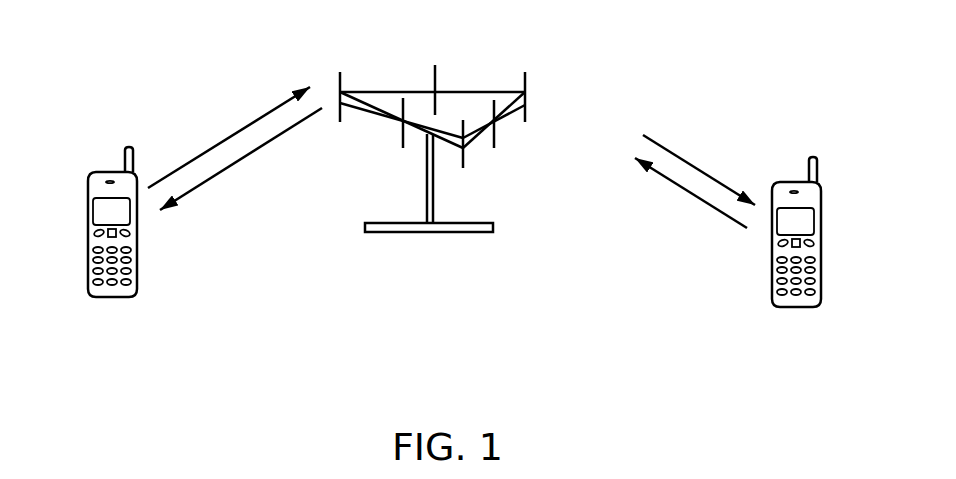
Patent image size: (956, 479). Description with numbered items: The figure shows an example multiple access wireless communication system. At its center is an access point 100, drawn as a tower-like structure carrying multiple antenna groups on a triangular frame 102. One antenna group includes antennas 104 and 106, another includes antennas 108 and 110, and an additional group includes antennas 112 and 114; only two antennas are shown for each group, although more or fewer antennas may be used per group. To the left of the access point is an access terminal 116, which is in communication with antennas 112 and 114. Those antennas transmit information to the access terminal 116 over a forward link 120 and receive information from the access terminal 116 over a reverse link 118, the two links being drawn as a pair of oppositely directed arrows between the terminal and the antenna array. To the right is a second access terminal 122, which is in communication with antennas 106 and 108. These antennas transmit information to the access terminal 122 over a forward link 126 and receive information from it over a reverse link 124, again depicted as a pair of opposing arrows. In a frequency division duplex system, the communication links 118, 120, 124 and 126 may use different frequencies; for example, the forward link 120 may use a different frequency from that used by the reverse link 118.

The access point 100 is at (442, 232).
The antenna array frame 102 is at (432, 120).
The antenna 104 is at (464, 163).
The antenna 106 is at (496, 135).
The antenna 108 is at (527, 110).
The antenna 110 is at (436, 73).
The antenna 112 is at (340, 80).
The antenna 114 is at (403, 139).
The access terminal 116 is at (88, 210).
The reverse link 118 is at (242, 128).
The forward link 120 is at (223, 173).
The access terminal 122 is at (822, 233).
The reverse link 124 is at (703, 202).
The forward link 126 is at (697, 163).